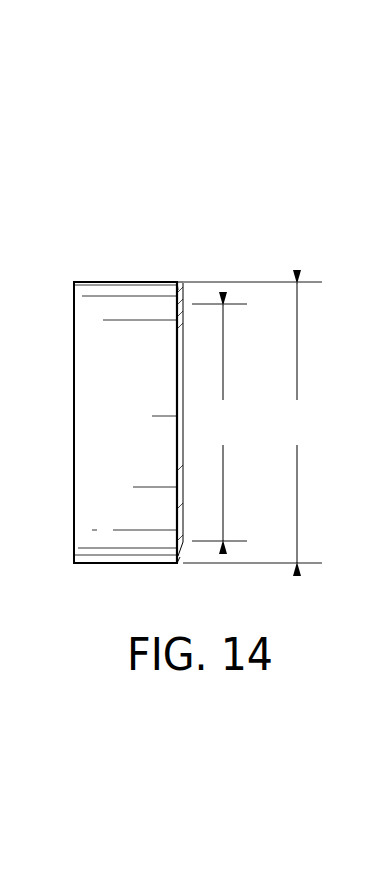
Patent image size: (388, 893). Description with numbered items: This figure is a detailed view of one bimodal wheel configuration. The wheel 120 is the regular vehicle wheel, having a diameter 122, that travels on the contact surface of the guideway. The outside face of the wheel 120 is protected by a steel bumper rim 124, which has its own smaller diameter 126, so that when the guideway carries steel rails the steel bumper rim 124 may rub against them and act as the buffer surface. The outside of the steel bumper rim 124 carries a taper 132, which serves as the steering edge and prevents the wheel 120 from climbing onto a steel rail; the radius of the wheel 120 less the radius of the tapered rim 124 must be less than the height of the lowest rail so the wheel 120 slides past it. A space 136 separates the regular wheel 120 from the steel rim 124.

The wheel 120 is at (222, 158).
The diameter 122 is at (252, 422).
The steel bumper rim 124 is at (185, 300).
The diameter 126 is at (219, 422).
The taper 132 is at (180, 300).
The space 136 is at (177, 284).